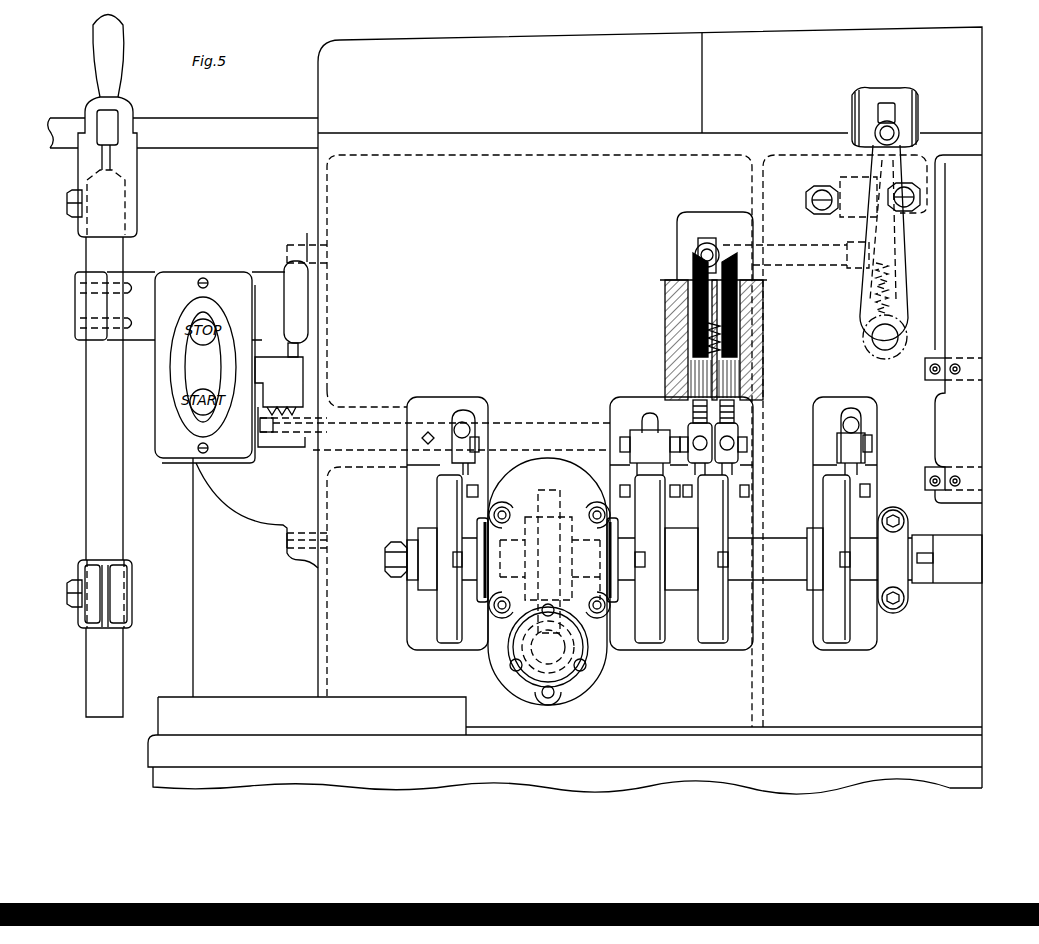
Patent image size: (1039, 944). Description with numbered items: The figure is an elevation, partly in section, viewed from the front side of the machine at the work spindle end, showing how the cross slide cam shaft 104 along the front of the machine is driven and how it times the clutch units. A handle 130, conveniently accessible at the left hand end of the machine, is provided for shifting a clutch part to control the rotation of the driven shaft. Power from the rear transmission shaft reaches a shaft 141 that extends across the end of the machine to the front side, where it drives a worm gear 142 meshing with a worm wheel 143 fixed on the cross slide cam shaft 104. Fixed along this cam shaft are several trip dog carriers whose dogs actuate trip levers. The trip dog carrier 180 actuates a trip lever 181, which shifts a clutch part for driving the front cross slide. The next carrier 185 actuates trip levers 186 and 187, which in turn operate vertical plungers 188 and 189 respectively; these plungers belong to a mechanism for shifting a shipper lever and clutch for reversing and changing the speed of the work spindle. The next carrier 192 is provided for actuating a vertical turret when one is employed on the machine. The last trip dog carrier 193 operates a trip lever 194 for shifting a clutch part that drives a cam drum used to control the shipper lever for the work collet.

The cross slide cam shaft 104 is at (960, 531).
The handle 130 is at (297, 293).
The shaft 141 is at (537, 645).
The worm gear 142 is at (540, 663).
The worm wheel 143 is at (568, 484).
The trip dog carrier 180 is at (837, 623).
The trip lever 181 is at (855, 457).
The trip dog carrier 185 is at (716, 637).
The trip lever 186 is at (733, 433).
The trip lever 187 is at (680, 425).
The vertical plunger 188 is at (743, 300).
The vertical plunger 189 is at (622, 262).
The trip dog carrier 192 is at (647, 638).
The trip dog carrier 193 is at (448, 602).
The trip lever 194 is at (468, 430).